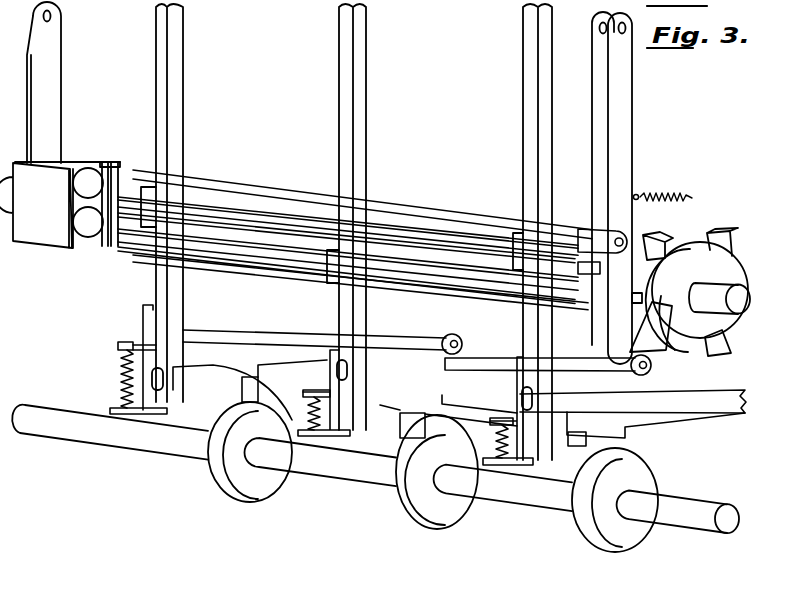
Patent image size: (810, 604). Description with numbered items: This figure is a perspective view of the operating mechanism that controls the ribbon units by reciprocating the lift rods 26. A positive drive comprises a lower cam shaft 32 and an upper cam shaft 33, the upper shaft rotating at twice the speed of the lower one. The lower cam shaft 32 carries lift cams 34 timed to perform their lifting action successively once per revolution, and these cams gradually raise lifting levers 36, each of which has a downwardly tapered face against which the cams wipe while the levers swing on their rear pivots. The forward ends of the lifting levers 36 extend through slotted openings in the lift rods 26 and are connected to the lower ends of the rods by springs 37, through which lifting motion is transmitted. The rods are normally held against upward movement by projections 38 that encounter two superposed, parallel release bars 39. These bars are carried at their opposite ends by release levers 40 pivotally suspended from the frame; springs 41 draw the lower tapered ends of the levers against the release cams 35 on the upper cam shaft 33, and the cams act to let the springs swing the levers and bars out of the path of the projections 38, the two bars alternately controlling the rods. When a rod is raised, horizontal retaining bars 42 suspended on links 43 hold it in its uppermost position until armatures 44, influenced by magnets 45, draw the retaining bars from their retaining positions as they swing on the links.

The lift rods 26 is at (162, 82).
The lower cam shaft 32 is at (82, 436).
The upper cam shaft 33 is at (715, 302).
The lift cams 34 is at (433, 477).
The release cams 35 is at (657, 234).
The lifting levers 36 is at (459, 388).
The springs 37 is at (123, 373).
The projections 38 is at (195, 183).
The release bars 39 is at (452, 194).
The release levers 40 is at (600, 101).
The springs 41 is at (657, 191).
The retaining bars 42 is at (243, 218).
The links 43 is at (50, 54).
The armatures 44 is at (108, 165).
The magnets 45 is at (88, 168).